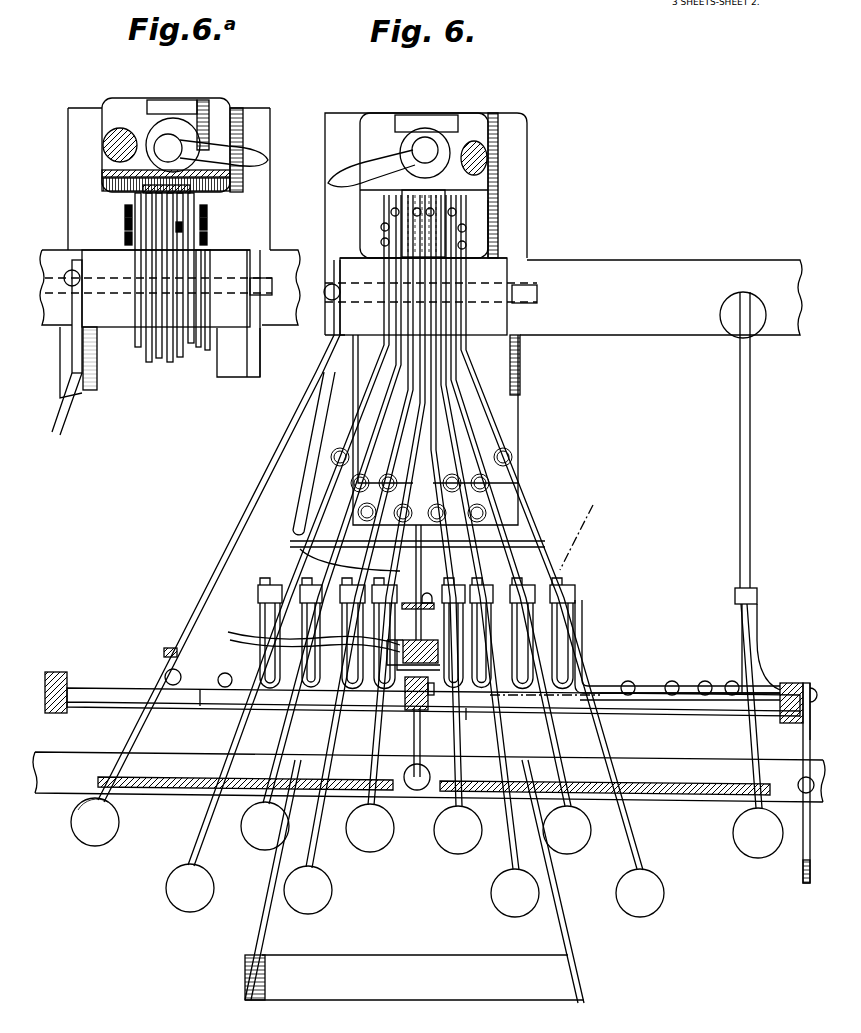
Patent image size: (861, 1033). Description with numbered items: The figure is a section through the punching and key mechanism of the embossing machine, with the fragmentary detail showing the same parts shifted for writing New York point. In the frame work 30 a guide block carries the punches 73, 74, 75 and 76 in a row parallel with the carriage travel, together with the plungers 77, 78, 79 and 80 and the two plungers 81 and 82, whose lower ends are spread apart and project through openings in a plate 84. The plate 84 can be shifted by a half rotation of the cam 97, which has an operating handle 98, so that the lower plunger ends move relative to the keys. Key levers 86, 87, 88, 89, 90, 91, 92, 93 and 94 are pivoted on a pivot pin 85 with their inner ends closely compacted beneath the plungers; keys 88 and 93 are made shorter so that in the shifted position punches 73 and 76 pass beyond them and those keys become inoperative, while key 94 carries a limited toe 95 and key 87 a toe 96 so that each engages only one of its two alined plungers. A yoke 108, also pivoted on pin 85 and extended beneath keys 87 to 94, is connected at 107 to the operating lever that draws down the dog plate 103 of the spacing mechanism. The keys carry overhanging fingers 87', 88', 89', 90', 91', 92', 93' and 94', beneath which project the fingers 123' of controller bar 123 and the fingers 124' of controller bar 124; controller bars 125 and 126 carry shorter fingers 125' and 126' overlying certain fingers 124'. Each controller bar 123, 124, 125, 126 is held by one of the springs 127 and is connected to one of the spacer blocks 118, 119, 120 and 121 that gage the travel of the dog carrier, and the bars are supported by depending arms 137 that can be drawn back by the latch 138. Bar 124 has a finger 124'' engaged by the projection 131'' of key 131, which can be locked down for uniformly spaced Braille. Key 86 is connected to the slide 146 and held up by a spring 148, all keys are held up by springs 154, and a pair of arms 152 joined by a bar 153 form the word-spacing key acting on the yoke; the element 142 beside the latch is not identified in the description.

In FIG. 6, the frame work 30 is at (632, 262).
In FIG. 6A, the punch 73 is at (133, 193).
In FIG. 6, the punch 73 is at (395, 212).
In FIG. 6A, the punch 74 is at (157, 193).
In FIG. 6, the punch 74 is at (417, 210).
In FIG. 6A, the punch 75 is at (190, 163).
In FIG. 6, the punch 75 is at (432, 210).
In FIG. 6A, the punch 76 is at (205, 205).
In FIG. 6, the punch 76 is at (455, 212).
In FIG. 6A, the plunger 77 is at (125, 210).
In FIG. 6, the plunger 77 is at (383, 227).
In FIG. 6A, the plunger 78 is at (143, 230).
In FIG. 6, the plunger 78 is at (407, 228).
In FIG. 6A, the plunger 79 is at (187, 233).
In FIG. 6, the plunger 79 is at (445, 232).
In FIG. 6A, the plunger 80 is at (207, 218).
In FIG. 6, the plunger 80 is at (463, 229).
In FIG. 6A, the plunger 81 is at (125, 222).
In FIG. 6, the plunger 81 is at (383, 243).
In FIG. 6A, the plunger 82 is at (207, 242).
In FIG. 6, the plunger 82 is at (463, 246).
In FIG. 6, the plate 84 is at (487, 245).
In FIG. 6A, the pivot pin 85 is at (277, 318).
In FIG. 6, the pivot pin 85 is at (538, 292).
In FIG. 6A, the key 86 is at (72, 378).
In FIG. 6, the key 86 is at (320, 379).
In FIG. 6A, the key lever 87 is at (119, 299).
In FIG. 6, the key lever 87 is at (277, 569).
In FIG. 6A, the key lever 88 is at (138, 298).
In FIG. 6, the key lever 88 is at (310, 532).
In FIG. 6A, the key lever 89 is at (150, 306).
In FIG. 6, the key lever 89 is at (348, 560).
In FIG. 6A, the key lever 90 is at (171, 306).
In FIG. 6, the key lever 90 is at (388, 543).
In FIG. 6A, the key lever 91 is at (185, 297).
In FIG. 6, the key lever 91 is at (447, 546).
In FIG. 6A, the key lever 92 is at (198, 306).
In FIG. 6, the key lever 92 is at (490, 564).
In FIG. 6A, the key lever 93 is at (213, 335).
In FIG. 6, the key lever 93 is at (521, 543).
In FIG. 6A, the key lever 94 is at (209, 313).
In FIG. 6, the key lever 94 is at (562, 569).
In FIG. 6A, the plunger-engaging toe 95 is at (207, 230).
In FIG. 6A, the toe 96 is at (125, 237).
In FIG. 6A, the cam 97 is at (195, 130).
In FIG. 6, the cam 97 is at (453, 150).
In FIG. 6A, the operating handle 98 is at (247, 157).
In FIG. 6, the operating handle 98 is at (343, 177).
In FIG. 6, the dog plate 103 is at (410, 608).
In FIG. 6, the connection 107 is at (335, 545).
In FIG. 6, the yoke 108 is at (300, 483).
In FIG. 6, the spacer block 118 is at (385, 655).
In FIG. 6, the spacer block 119 is at (320, 702).
In FIG. 6, the spacer block 120 is at (418, 790).
In FIG. 6, the spacer block 121 is at (437, 693).
In FIG. 6, the controller bar 123 is at (212, 674).
In FIG. 6, the fingers 123' is at (307, 631).
In FIG. 6, the controller bar 124 is at (433, 688).
In FIG. 6, the fingers 124' is at (480, 618).
In FIG. 6, the finger 124'' is at (778, 648).
In FIG. 6, the controller bar 125 is at (677, 654).
In FIG. 6, the fingers 125' is at (449, 728).
In FIG. 6, the controller bar 126 is at (690, 721).
In FIG. 6, the fingers 126' is at (615, 616).
In FIG. 6, the springs 127 is at (725, 680).
In FIG. 6, the key 131 is at (756, 593).
In FIG. 6, the projection 131'' is at (782, 571).
In FIG. 6, the depending arms 137 is at (68, 672).
In FIG. 6, the latch 138 is at (806, 738).
In FIG. 6, the slide bar 142 is at (804, 860).
In FIG. 6, the slide 146 is at (171, 648).
In FIG. 6, the spring 148 is at (165, 677).
In FIG. 6, the arms 152 is at (270, 930).
In FIG. 6, the bar 153 is at (414, 977).
In FIG. 6, the springs 154 is at (490, 483).
In FIG. 6, the overhanging finger 87' is at (264, 611).
In FIG. 6, the overhanging finger 88' is at (306, 632).
In FIG. 6, the overhanging finger 89' is at (347, 633).
In FIG. 6, the overhanging finger 90' is at (384, 622).
In FIG. 6, the overhanging finger 91' is at (454, 622).
In FIG. 6, the overhanging finger 92' is at (504, 623).
In FIG. 6, the overhanging finger 93' is at (549, 613).
In FIG. 6, the overhanging finger 94' is at (592, 624).